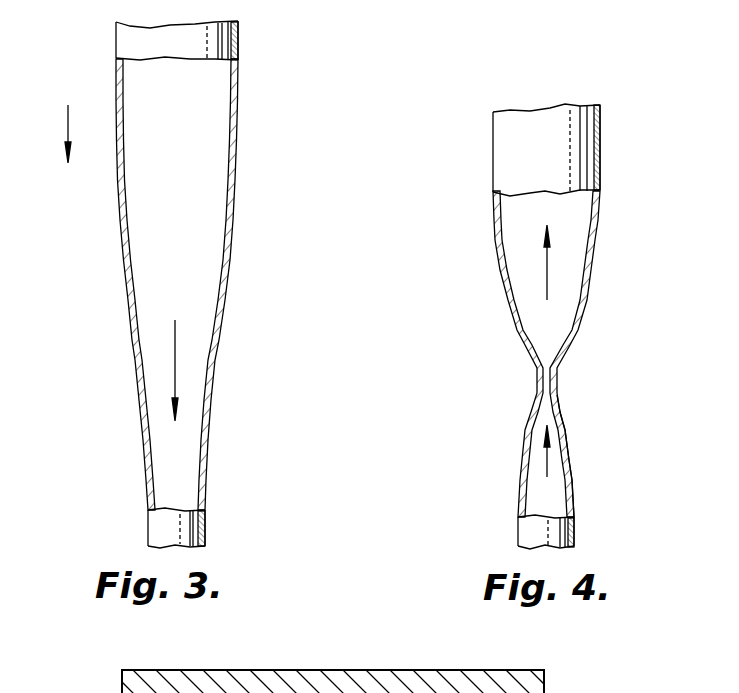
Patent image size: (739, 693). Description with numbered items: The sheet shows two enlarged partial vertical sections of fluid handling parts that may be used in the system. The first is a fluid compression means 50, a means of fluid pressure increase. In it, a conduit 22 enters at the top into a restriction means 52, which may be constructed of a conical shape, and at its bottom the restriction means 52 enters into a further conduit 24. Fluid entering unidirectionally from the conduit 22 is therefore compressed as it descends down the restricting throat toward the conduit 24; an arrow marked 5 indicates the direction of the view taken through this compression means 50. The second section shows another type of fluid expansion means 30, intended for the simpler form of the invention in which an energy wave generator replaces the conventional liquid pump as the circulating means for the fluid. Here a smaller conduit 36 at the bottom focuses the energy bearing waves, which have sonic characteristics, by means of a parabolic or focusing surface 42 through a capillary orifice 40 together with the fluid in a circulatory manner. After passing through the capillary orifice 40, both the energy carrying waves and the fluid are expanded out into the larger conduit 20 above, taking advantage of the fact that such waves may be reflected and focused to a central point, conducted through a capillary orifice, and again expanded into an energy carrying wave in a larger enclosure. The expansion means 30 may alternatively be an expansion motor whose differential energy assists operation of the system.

In FIG. 3, the section view direction arrow 5 is at (112, 165).
In FIG. 4, the larger conduit 20 is at (595, 160).
In FIG. 3, the conduit 22 is at (240, 36).
In FIG. 3, the conduit 24 is at (206, 530).
In FIG. 4, the fluid expansion means 30 is at (524, 389).
In FIG. 4, the smaller conduit 36 is at (576, 533).
In FIG. 4, the capillary orifice 40 is at (556, 383).
In FIG. 4, the parabolic or focusing surface 42 is at (567, 437).
In FIG. 3, the fluid compression means 50 is at (113, 205).
In FIG. 3, the restriction means 52 is at (223, 298).